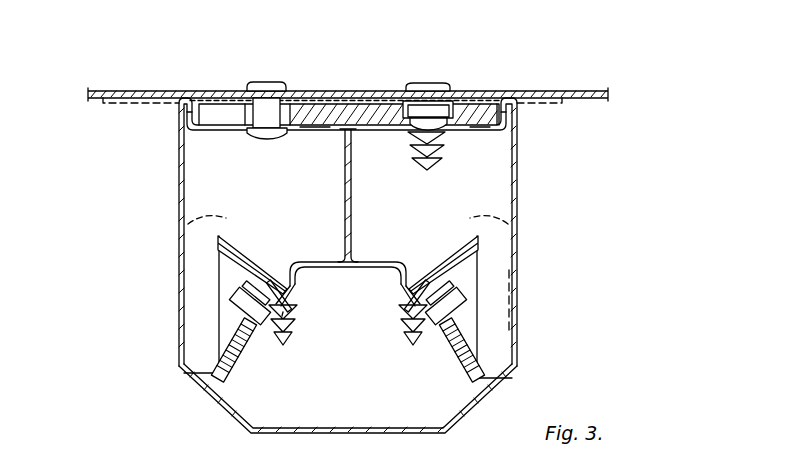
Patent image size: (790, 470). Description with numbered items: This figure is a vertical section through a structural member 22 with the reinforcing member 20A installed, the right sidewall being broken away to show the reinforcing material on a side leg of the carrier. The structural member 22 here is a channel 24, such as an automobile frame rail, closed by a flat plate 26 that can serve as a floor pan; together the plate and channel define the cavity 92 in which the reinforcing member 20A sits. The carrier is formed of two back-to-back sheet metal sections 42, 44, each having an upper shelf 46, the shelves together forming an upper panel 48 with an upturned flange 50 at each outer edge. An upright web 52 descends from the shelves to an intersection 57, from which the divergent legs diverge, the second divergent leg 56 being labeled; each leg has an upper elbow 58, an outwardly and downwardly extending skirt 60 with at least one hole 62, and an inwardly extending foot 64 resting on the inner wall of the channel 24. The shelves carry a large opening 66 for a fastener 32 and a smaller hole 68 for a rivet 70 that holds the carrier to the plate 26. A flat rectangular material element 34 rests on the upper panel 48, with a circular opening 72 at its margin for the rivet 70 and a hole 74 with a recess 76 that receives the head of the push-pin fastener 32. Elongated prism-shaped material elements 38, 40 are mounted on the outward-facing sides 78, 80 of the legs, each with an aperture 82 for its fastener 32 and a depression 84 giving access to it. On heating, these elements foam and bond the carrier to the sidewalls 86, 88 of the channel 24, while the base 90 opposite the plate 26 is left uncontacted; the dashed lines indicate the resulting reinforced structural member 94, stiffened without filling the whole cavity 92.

The reinforcing member 20A is at (213, 129).
The structural member 22 is at (122, 92).
The channel 24 is at (517, 246).
The flat plate 26 is at (519, 96).
The fastener 32 is at (440, 158).
The reinforcing material element 34 is at (372, 110).
The reinforcing material element 38 is at (446, 245).
The reinforcing material element 40 is at (240, 243).
The sheet metal section 42 is at (344, 176).
The sheet metal section 44 is at (353, 188).
The upper shelf 46 is at (300, 131).
The upper panel 48 is at (330, 112).
The upturned flange 50 is at (185, 116).
The upright web 52 is at (353, 236).
The second divergent leg 56 is at (293, 297).
The intersection 57 is at (348, 268).
The upper elbow 58 is at (294, 262).
The skirt 60 is at (242, 352).
The hole 62 is at (284, 316).
The foot 64 is at (236, 404).
The opening 66 is at (416, 134).
The hole 68 is at (290, 122).
The rivet 70 is at (262, 83).
The circular opening 72 is at (257, 110).
The hole 74 is at (446, 122).
The recess 76 is at (458, 108).
The outward-facing side 78 is at (474, 354).
The outward-facing side 80 is at (216, 346).
The aperture 82 is at (270, 282).
The depression 84 is at (228, 288).
The sidewall 86 is at (517, 207).
The sidewall 88 is at (180, 213).
The base 90 is at (333, 433).
The cavity 92 is at (215, 183).
The reinforced structural member 94 is at (515, 305).